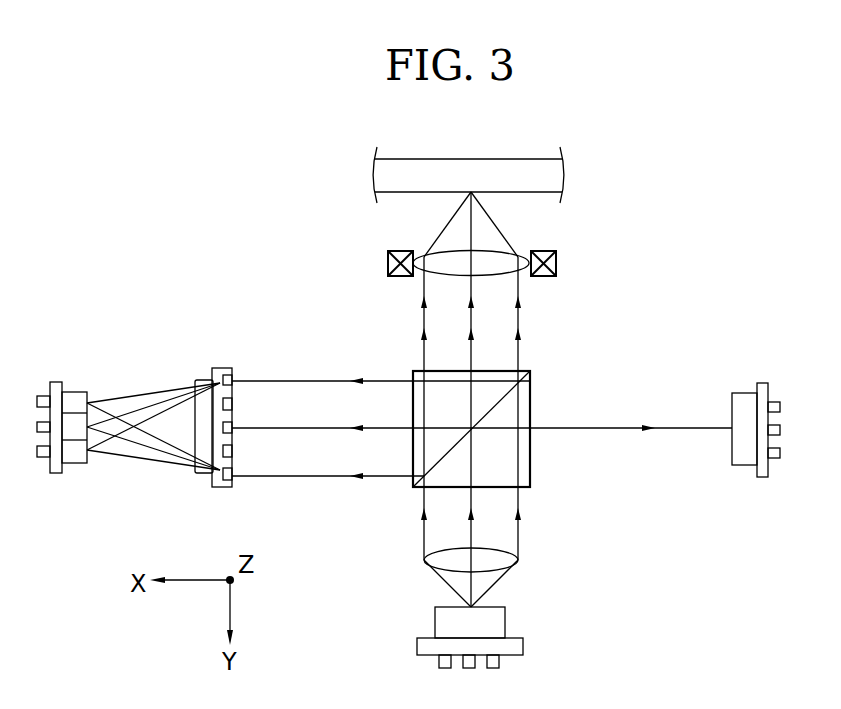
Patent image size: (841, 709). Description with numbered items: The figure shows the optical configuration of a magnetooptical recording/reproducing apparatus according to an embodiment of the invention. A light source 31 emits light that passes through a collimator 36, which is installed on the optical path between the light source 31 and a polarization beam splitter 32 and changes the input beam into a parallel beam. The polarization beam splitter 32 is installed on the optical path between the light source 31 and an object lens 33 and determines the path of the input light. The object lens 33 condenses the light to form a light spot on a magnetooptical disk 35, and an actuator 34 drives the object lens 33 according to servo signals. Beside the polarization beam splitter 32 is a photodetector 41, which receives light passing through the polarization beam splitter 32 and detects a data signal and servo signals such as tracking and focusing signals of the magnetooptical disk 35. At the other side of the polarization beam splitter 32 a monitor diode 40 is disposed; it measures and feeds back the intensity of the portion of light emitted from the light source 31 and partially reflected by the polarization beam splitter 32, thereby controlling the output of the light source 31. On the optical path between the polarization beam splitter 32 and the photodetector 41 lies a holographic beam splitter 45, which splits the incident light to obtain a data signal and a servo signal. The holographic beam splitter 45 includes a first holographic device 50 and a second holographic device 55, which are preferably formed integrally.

The light source 31 is at (493, 619).
The polarization beam splitter 32 is at (507, 456).
The object lens 33 is at (502, 265).
The actuator 34 is at (398, 262).
The magnetooptical disk 35 is at (550, 172).
The collimator 36 is at (505, 560).
The monitor diode 40 is at (747, 400).
The photodetector 41 is at (70, 457).
The holographic beam splitter 45 is at (257, 323).
The first holographic device 50 is at (222, 377).
The second holographic device 55 is at (208, 407).